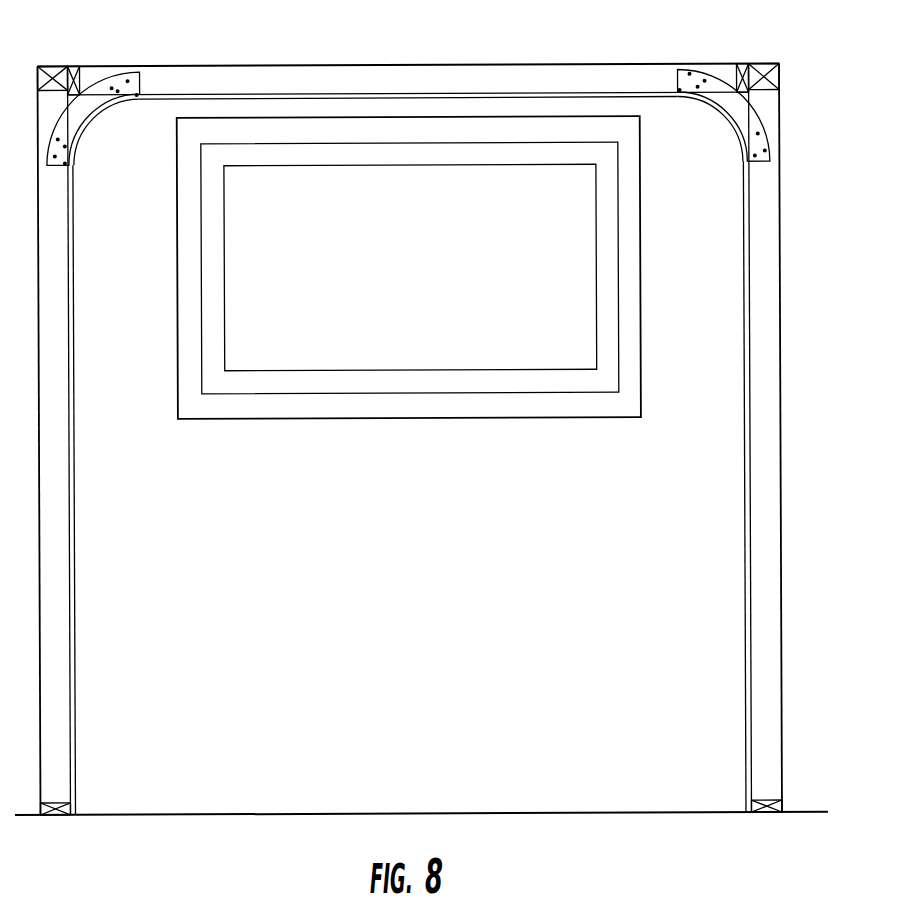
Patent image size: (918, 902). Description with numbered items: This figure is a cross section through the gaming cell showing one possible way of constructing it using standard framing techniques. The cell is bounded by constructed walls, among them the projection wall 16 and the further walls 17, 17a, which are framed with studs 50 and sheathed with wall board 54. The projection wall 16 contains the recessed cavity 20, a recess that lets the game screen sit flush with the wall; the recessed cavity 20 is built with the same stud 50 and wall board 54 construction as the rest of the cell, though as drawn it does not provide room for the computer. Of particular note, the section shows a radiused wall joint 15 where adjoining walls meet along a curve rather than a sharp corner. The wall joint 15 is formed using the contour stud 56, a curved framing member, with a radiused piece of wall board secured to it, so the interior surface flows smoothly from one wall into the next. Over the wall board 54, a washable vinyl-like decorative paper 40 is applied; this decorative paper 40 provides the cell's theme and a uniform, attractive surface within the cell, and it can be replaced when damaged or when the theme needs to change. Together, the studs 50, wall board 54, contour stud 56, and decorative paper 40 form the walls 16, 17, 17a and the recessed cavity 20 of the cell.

The radiused wall joint 15 is at (98, 125).
The projection wall 16 is at (145, 397).
The wall 17 is at (75, 633).
The wall 17a is at (655, 99).
The recessed cavity 20 is at (642, 382).
The decorative paper 40 is at (78, 758).
The stud 50 is at (753, 63).
The wall board 54 is at (530, 94).
The contour stud 56 is at (763, 122).